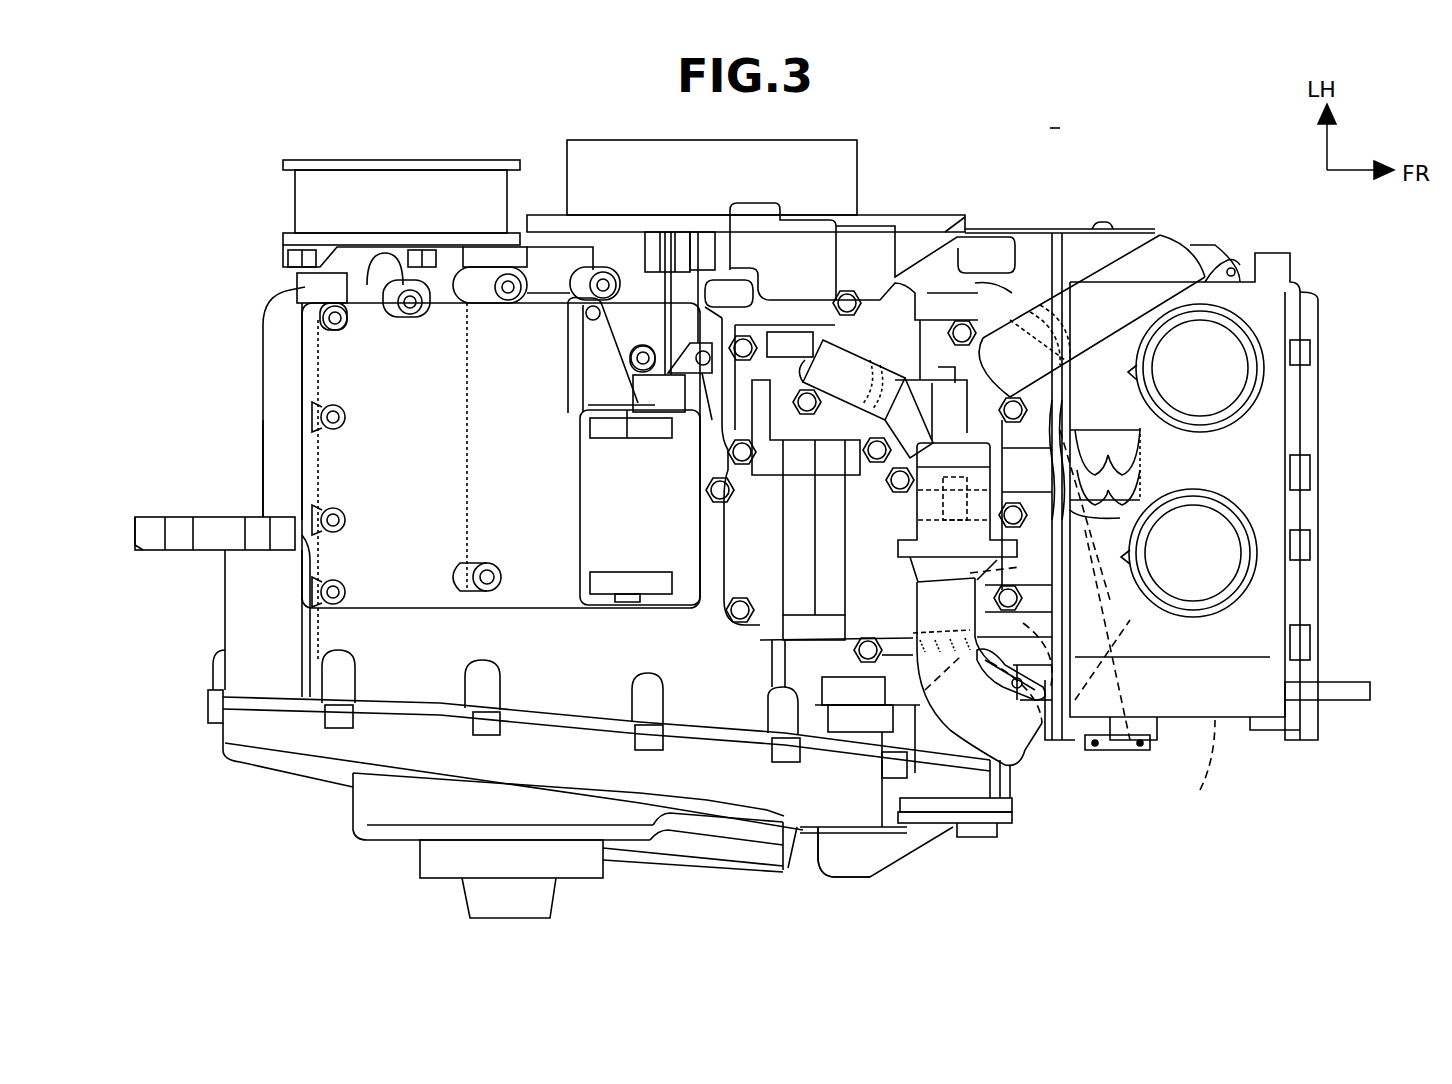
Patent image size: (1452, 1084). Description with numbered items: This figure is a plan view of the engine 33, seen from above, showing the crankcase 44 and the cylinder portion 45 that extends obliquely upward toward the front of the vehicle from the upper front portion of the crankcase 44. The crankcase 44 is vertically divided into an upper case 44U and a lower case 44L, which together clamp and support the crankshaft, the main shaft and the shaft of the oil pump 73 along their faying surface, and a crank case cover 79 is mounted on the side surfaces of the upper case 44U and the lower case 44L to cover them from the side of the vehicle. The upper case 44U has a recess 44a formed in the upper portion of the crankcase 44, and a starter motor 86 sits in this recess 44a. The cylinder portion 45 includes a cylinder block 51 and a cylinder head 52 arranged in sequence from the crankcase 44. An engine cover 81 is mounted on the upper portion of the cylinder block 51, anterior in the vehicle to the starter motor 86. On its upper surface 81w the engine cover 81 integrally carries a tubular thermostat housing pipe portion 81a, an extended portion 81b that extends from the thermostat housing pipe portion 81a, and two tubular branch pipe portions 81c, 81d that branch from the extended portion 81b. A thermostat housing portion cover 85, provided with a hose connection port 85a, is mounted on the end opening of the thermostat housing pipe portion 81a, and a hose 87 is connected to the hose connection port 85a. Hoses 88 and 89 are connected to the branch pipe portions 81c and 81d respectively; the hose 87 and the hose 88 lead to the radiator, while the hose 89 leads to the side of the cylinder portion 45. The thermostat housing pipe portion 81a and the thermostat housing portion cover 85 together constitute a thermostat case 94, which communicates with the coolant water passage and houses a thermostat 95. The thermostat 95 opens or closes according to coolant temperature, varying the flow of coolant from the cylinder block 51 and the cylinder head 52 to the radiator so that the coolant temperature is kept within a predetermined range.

The engine 33 is at (1052, 128).
The crankcase 44 is at (258, 350).
The recess 44a is at (530, 345).
The upper case 44U is at (366, 461).
The lower case 44L is at (258, 630).
The cylinder portion 45 is at (1232, 245).
The cylinder block 51 is at (1033, 615).
The cylinder head 52 is at (1208, 685).
The oil pump 73 is at (852, 878).
The crank case cover 79 is at (325, 770).
The engine cover 81 is at (948, 305).
The thermostat housing pipe portion 81a is at (988, 480).
The extended portion 81b is at (985, 432).
The branch pipe portion 81c is at (1000, 343).
The branch pipe portion 81d is at (915, 410).
The upper surface 81w is at (862, 600).
The thermostat housing portion cover 85 is at (1042, 560).
The hose connection port 85a is at (898, 617).
The starter motor 86 is at (662, 545).
The hose 87 is at (985, 740).
The hose 88 is at (1145, 250).
The hose 89 is at (855, 368).
The thermostat case 94 is at (971, 402).
The thermostat 95 is at (1095, 575).